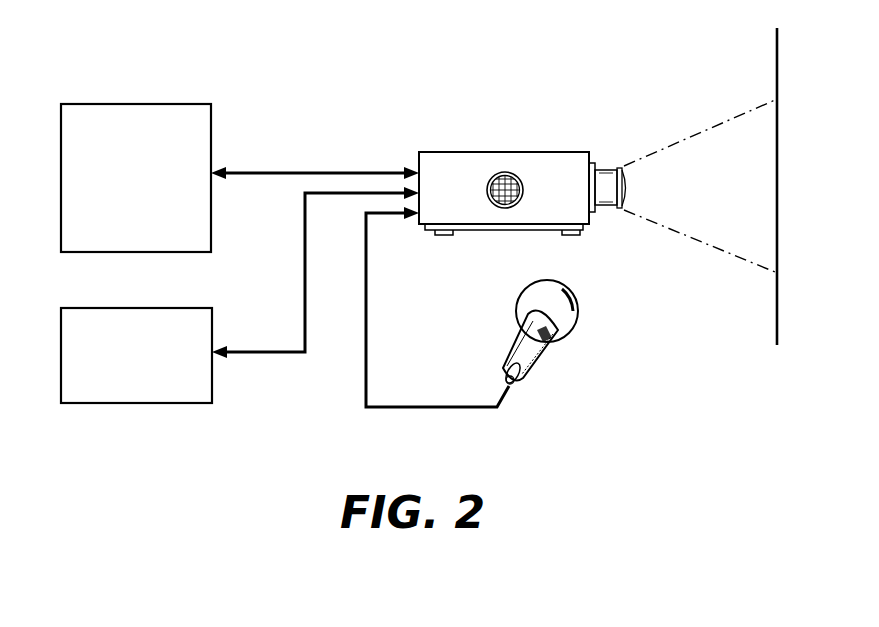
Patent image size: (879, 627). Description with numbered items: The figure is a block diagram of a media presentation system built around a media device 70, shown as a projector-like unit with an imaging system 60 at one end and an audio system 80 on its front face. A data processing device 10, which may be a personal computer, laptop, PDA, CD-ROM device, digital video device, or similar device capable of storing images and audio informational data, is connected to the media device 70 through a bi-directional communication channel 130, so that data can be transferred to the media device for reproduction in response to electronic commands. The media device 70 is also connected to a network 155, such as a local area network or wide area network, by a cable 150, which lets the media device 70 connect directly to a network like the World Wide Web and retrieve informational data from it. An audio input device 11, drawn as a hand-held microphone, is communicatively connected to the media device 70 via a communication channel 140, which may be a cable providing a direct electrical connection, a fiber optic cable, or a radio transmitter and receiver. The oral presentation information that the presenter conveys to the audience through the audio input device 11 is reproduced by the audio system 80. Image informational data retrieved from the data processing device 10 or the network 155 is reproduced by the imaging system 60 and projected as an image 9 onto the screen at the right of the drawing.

The image 9 is at (773, 67).
The data processing device 10 is at (138, 102).
The audio input device 11 is at (548, 352).
The imaging system 60 is at (622, 190).
The media device 70 is at (560, 181).
The audio system 80 is at (506, 208).
The bi-directional communication channel 130 is at (272, 170).
The communication channel 140 is at (367, 330).
The cable 150 is at (273, 355).
The network 155 is at (140, 405).